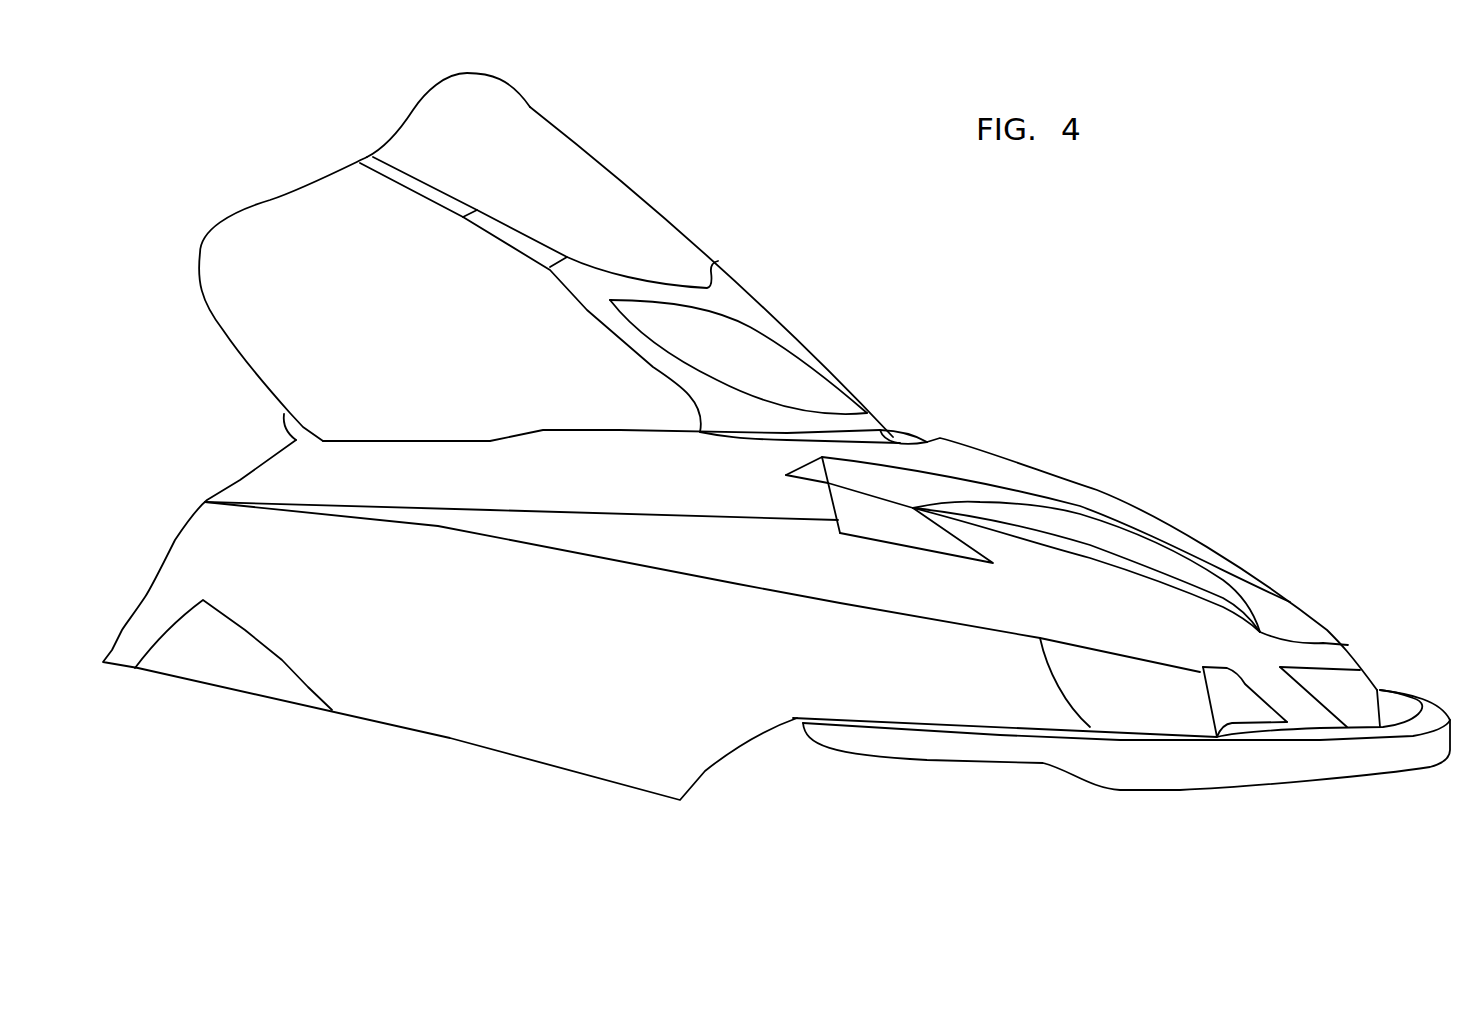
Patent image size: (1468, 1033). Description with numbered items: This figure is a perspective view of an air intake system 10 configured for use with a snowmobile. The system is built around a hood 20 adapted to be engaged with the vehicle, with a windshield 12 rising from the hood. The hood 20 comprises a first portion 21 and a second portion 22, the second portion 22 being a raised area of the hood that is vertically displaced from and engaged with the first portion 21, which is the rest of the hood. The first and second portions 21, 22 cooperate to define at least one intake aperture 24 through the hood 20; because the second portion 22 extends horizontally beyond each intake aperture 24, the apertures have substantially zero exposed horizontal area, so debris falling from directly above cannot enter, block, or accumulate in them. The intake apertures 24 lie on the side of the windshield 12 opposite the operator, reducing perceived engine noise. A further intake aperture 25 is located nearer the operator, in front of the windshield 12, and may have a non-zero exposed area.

The air intake system 10 is at (1228, 482).
The windshield 12 is at (572, 118).
The hood 20 is at (946, 419).
The first portion 21 is at (976, 581).
The second portion 22 is at (1097, 493).
The intake aperture 24 is at (1013, 517).
The further intake aperture 25 is at (899, 443).